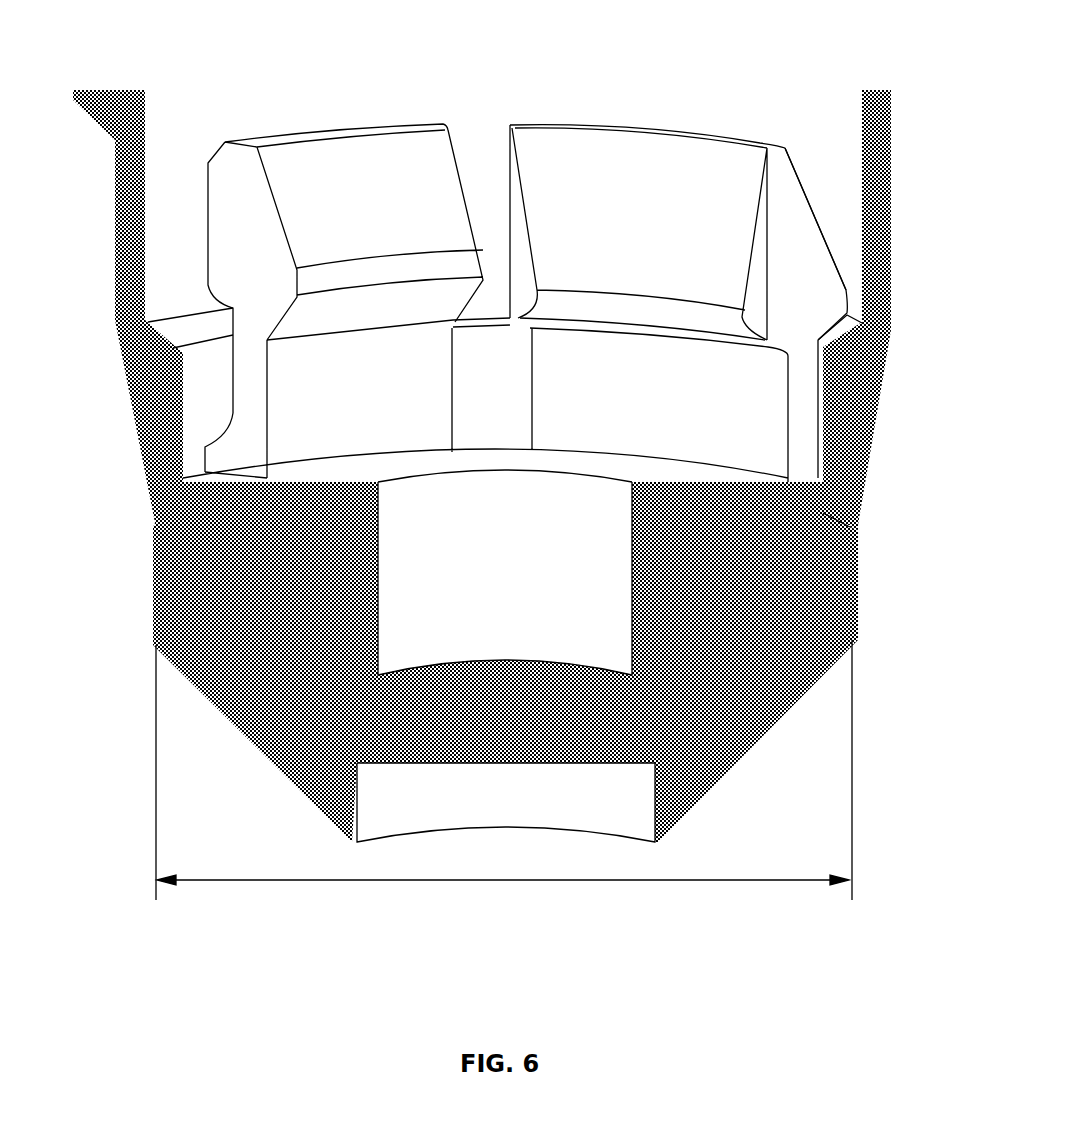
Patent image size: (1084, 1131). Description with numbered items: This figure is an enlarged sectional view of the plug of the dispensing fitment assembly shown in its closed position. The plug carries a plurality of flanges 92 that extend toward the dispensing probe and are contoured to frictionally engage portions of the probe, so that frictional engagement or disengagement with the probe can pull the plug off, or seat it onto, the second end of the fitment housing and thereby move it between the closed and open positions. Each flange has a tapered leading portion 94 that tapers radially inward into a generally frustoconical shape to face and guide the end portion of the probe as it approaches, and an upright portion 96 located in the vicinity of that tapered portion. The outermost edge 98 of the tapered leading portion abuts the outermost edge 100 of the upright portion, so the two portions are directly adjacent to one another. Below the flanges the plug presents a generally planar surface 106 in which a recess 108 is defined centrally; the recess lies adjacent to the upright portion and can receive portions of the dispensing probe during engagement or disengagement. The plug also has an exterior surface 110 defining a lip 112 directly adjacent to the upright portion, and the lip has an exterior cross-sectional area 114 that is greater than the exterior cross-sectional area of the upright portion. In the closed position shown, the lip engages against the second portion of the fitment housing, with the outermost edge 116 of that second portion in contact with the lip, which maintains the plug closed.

The flanges 92 is at (342, 150).
The tapered leading portion 94 is at (780, 172).
The upright portion 96 is at (794, 428).
The outermost edge of the tapered leading portion 98 is at (773, 346).
The outermost edge of the upright portion 100 is at (777, 352).
The generally planar surface 106 is at (372, 472).
The recess 108 is at (508, 472).
The exterior surface 110 is at (182, 520).
The lip 112 is at (848, 524).
The exterior cross-sectional area 114 is at (377, 880).
The outermost edge of the second portion 116 is at (838, 518).